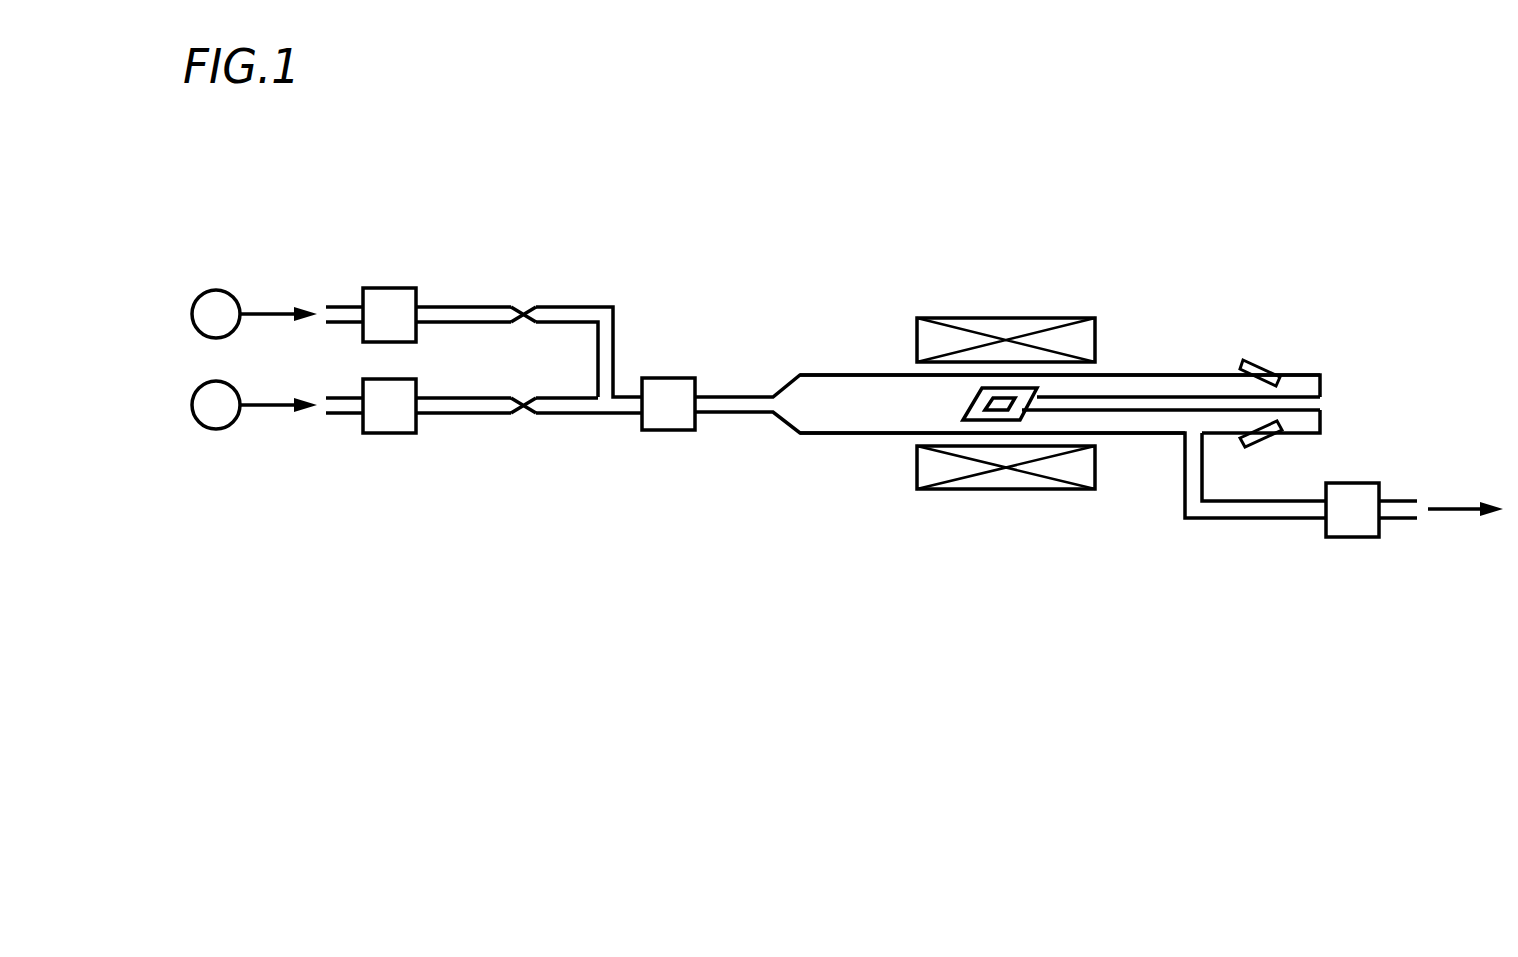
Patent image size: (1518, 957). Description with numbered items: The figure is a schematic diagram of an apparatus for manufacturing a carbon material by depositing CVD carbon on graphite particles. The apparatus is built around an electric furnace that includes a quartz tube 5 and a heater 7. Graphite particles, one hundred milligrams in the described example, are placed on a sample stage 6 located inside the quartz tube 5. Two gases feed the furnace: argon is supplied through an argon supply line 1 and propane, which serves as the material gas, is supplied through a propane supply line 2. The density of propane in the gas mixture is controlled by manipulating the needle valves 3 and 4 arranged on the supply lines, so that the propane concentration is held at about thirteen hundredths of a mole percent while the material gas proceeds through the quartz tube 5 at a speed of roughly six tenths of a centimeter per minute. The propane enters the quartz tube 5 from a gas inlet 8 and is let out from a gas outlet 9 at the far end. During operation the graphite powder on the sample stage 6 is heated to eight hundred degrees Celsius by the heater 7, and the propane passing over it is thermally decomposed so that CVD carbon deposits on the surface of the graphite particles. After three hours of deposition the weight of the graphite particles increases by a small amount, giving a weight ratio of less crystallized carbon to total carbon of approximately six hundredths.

The argon supply line 1 is at (271, 312).
The propane supply line 2 is at (269, 410).
The needle valve 3 is at (522, 305).
The needle valve 4 is at (523, 415).
The quartz tube 5 is at (825, 373).
The sample stage 6 is at (978, 399).
The heater 7 is at (1005, 317).
The gas inlet 8 is at (730, 430).
The gas outlet 9 is at (1268, 520).